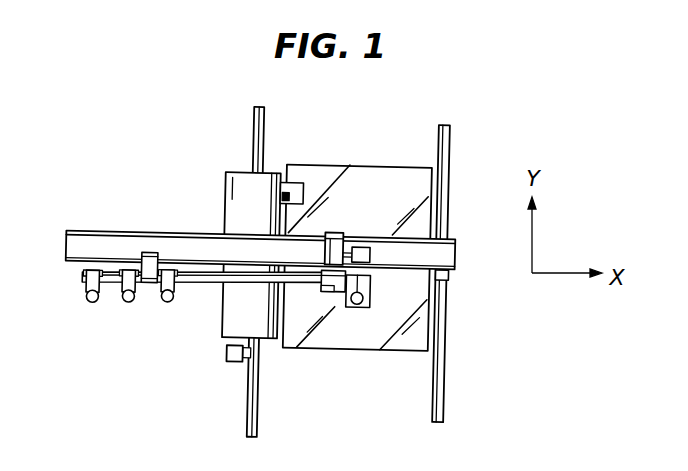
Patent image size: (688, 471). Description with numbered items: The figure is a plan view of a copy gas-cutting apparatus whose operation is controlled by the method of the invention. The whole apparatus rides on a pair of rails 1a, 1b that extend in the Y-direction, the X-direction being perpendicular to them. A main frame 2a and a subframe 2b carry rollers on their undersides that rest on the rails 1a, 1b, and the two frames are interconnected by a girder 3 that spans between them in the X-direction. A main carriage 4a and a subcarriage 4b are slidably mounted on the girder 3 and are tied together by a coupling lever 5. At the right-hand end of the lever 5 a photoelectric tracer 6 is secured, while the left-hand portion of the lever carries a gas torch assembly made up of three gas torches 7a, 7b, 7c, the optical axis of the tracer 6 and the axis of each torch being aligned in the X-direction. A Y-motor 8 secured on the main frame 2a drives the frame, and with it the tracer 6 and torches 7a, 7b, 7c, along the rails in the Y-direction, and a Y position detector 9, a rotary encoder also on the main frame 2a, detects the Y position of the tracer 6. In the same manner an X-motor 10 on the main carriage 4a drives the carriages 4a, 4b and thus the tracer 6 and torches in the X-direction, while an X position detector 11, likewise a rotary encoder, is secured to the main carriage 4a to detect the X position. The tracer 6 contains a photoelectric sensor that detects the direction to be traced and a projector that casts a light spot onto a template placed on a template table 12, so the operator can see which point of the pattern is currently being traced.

The rail 1a is at (262, 408).
The rail 1b is at (446, 396).
The main frame 2a is at (224, 193).
The subframe 2b is at (449, 273).
The girder 3 is at (96, 234).
The main carriage 4a is at (331, 290).
The subcarriage 4b is at (153, 254).
The coupling lever 5 is at (203, 284).
The photoelectric tracer 6 is at (369, 308).
The gas torch 7a is at (91, 305).
The gas torch 7b is at (129, 304).
The gas torch 7c is at (171, 303).
The Y-motor 8 is at (299, 187).
The Y position detector 9 is at (232, 363).
The X-motor 10 is at (338, 231).
The X position detector 11 is at (367, 245).
The template table 12 is at (393, 267).